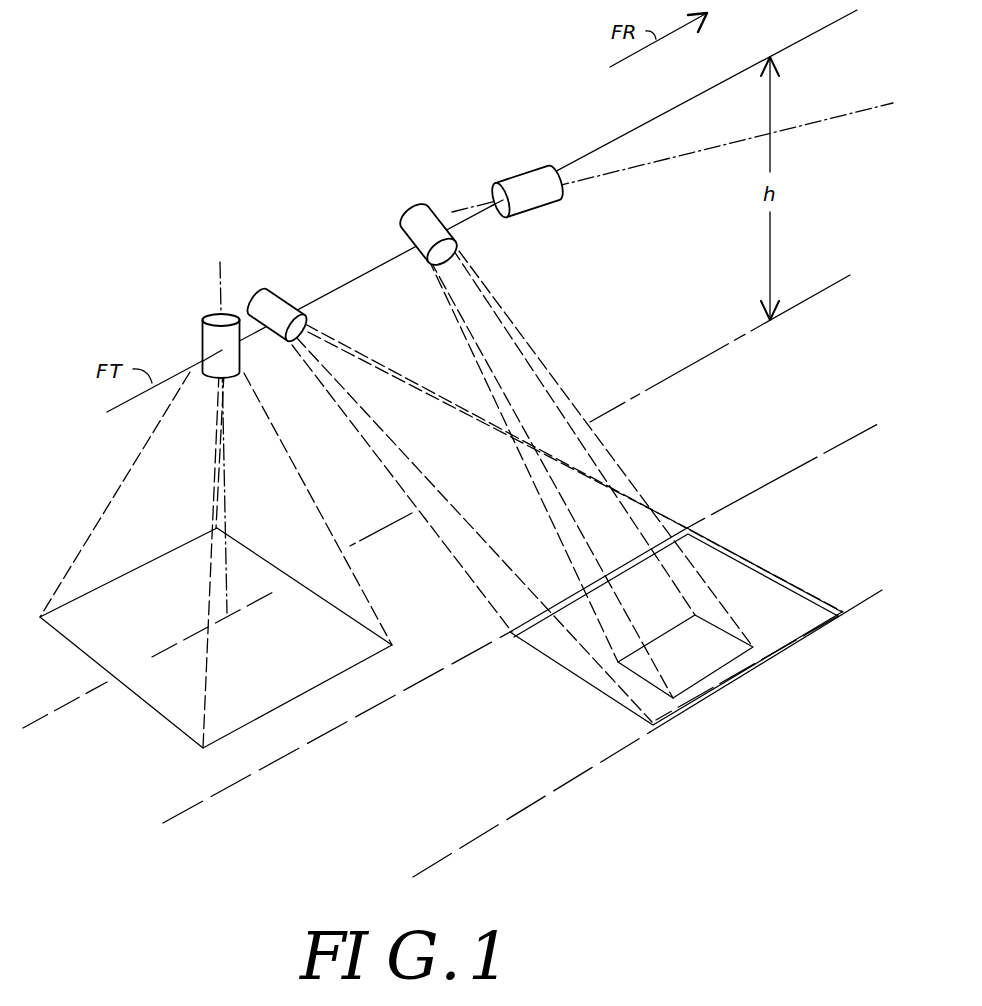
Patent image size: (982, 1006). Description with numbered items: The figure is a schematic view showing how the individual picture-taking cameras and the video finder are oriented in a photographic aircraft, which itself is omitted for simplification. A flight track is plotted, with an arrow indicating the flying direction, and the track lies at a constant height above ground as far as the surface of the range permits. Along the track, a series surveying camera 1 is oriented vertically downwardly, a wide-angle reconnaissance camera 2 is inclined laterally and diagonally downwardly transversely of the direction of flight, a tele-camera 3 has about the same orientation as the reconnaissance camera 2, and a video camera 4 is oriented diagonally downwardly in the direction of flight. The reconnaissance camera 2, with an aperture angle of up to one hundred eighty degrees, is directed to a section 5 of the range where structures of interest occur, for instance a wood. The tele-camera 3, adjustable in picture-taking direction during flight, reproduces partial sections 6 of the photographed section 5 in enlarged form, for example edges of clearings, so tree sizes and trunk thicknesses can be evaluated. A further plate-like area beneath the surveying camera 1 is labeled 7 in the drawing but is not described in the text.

The series surveying camera 1 is at (207, 330).
The wide-angle reconnaissance camera 2 is at (272, 297).
The tele-camera 3 is at (404, 222).
The video camera 4 is at (518, 184).
The section of the range 5 is at (787, 603).
The partial section 6 is at (672, 643).
The calibration plate 7 is at (145, 580).